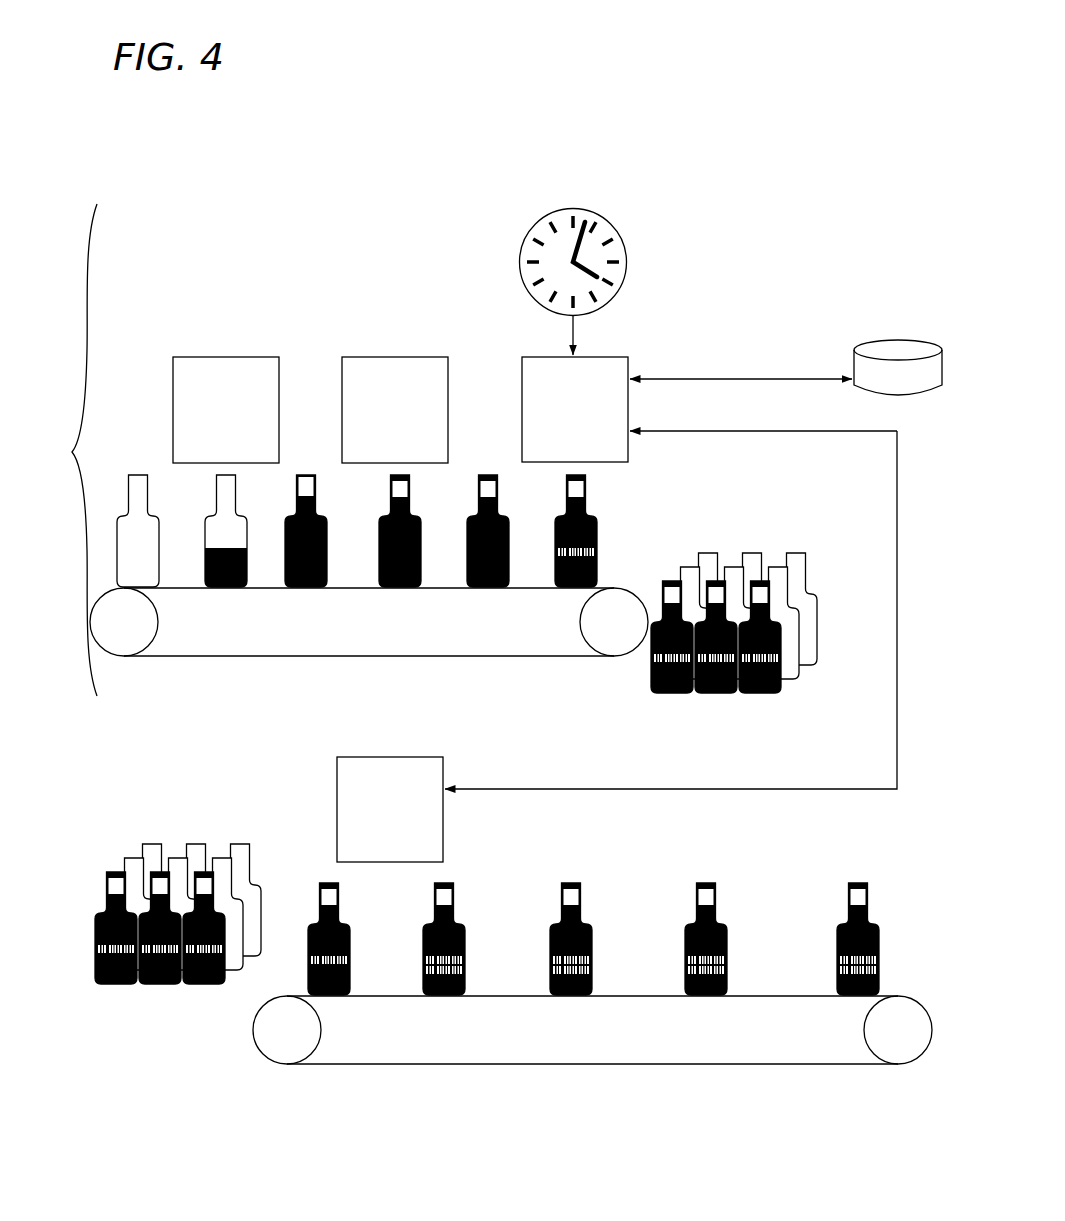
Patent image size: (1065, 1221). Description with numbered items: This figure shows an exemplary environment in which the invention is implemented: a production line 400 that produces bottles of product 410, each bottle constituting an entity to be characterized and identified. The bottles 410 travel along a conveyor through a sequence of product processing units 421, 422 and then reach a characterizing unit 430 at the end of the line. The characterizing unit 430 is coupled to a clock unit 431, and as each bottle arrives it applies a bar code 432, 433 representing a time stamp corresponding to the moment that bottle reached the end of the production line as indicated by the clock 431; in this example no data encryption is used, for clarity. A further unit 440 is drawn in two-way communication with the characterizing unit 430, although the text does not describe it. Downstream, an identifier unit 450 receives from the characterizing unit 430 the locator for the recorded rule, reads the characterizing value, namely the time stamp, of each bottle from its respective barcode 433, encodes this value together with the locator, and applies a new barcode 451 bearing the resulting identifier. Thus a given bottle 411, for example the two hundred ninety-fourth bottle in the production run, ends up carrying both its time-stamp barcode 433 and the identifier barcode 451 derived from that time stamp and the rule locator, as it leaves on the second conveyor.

The production line 400 is at (64, 452).
The bottles of product 410 is at (453, 594).
The bottle 411 is at (513, 954).
The product processing unit 421 is at (233, 355).
The product processing unit 422 is at (400, 355).
The characterizing unit 430 is at (520, 355).
The clock unit 431 is at (536, 220).
The bar code 432 is at (599, 545).
The bar code 433 is at (352, 957).
The database 440 is at (866, 342).
The identifier unit 450 is at (331, 822).
The new barcode 451 is at (467, 957).